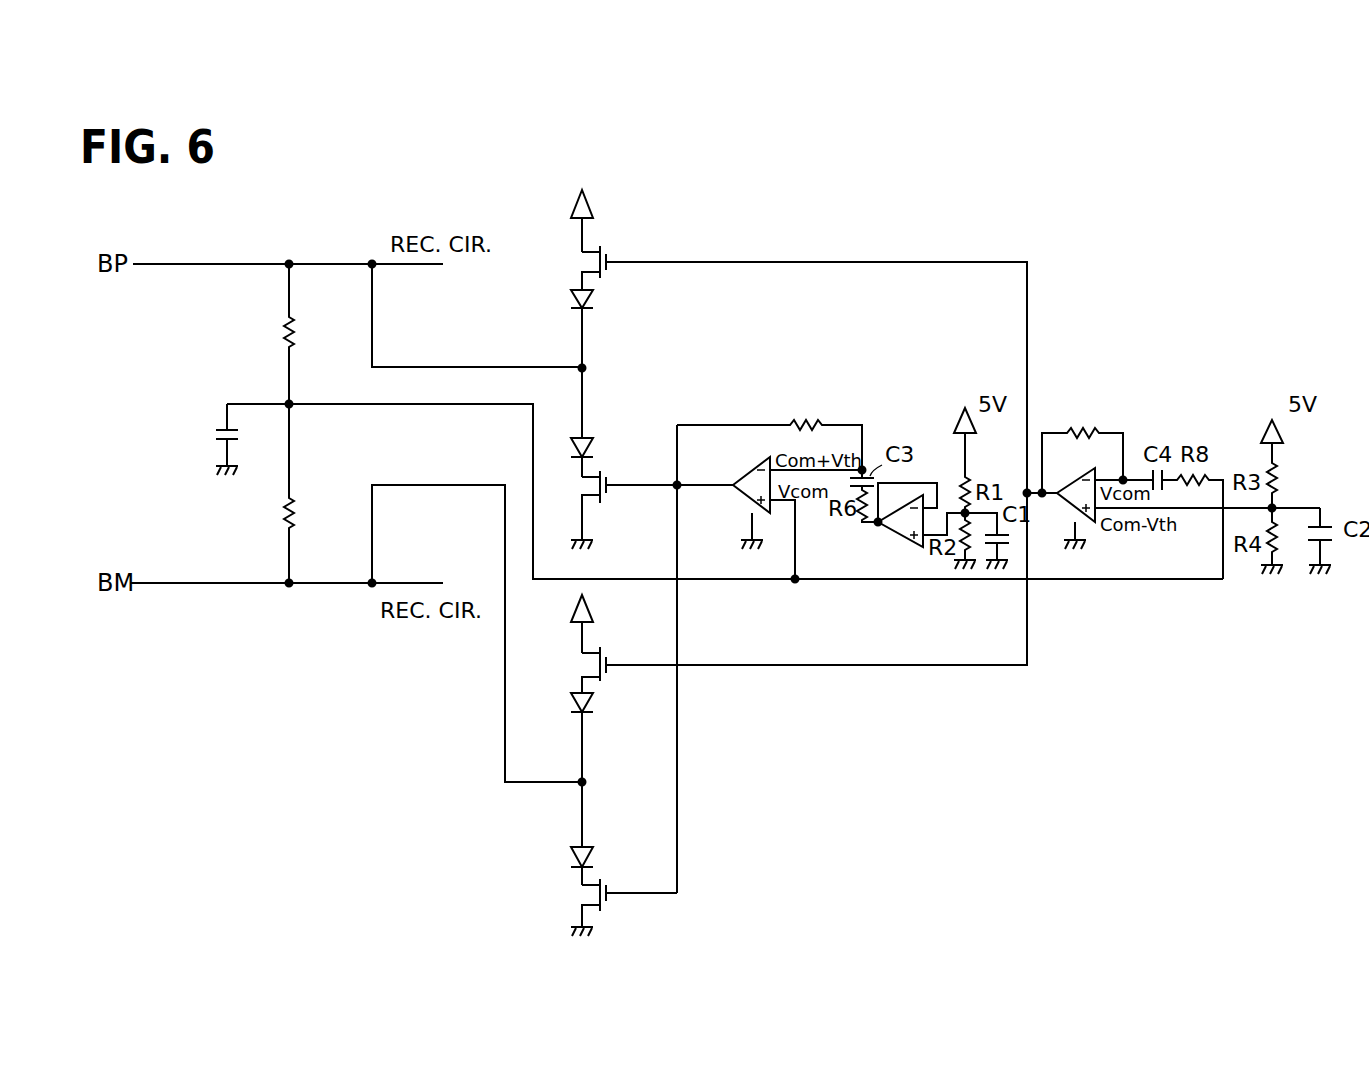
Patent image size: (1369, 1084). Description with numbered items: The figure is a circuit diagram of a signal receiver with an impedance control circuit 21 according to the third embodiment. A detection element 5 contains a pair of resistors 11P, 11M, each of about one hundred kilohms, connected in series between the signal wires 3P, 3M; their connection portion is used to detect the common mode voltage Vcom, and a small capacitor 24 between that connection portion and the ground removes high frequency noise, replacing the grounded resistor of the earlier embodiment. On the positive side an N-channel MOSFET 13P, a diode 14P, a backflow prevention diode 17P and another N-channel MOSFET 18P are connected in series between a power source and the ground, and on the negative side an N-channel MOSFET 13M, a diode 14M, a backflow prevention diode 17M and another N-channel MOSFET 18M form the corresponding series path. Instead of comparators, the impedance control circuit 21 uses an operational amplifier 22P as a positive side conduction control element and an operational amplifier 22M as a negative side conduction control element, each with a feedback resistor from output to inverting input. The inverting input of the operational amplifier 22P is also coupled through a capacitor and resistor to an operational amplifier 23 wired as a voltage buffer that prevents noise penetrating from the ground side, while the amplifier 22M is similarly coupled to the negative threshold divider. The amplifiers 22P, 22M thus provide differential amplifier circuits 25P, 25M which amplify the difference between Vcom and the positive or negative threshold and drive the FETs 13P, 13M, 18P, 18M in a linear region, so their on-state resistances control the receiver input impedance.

The signal wire 3P is at (188, 262).
The signal wire 3M is at (160, 586).
The detection element 5 is at (232, 382).
The resistor 11P is at (299, 316).
The resistor 11M is at (299, 498).
The capacitor 24 is at (213, 435).
The N-channel MOSFET 13P is at (609, 249).
The diode 14P is at (595, 299).
The diode 17P is at (595, 447).
The N-channel MOSFET 18P is at (606, 500).
The N-channel MOSFET 13M is at (609, 655).
The diode 14M is at (595, 703).
The diode 17M is at (595, 857).
The N-channel MOSFET 18M is at (606, 908).
The impedance control circuit 21 is at (926, 250).
The operational amplifier 22P is at (733, 478).
The operational amplifier 22M is at (1058, 503).
The operational amplifier 23 is at (894, 535).
The differential amplifier circuit 25P is at (845, 397).
The differential amplifier circuit 25M is at (1155, 408).